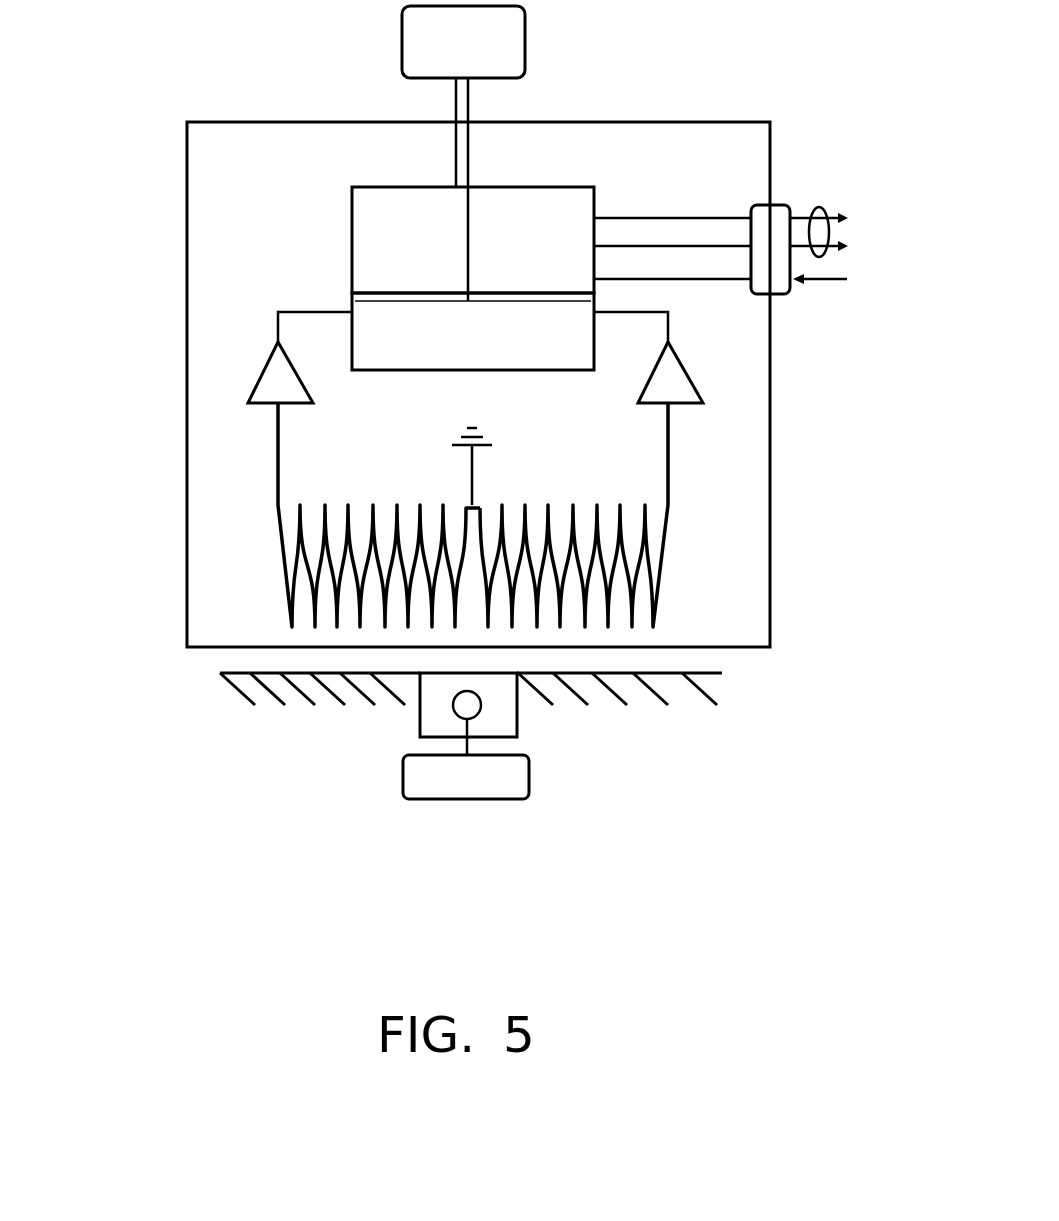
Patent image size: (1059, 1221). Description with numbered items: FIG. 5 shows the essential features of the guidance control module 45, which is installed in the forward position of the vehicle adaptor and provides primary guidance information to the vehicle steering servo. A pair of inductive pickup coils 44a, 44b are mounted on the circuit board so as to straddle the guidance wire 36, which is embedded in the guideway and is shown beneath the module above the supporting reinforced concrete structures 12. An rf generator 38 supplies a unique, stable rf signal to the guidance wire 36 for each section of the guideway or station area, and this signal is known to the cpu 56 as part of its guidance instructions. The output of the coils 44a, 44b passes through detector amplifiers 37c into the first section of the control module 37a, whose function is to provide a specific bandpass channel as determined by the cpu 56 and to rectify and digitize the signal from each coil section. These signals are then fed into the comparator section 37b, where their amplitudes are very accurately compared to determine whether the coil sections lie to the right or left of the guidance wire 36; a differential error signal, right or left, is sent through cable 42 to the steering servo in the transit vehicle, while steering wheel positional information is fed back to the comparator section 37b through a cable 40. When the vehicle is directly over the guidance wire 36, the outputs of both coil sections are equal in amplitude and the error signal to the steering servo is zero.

The cpu 56 is at (514, 46).
The guidance control module 45 is at (771, 497).
The comparator section 37b is at (385, 220).
The first section of the control module 37a is at (428, 315).
The detector amplifiers 37c is at (263, 383).
The inductive pickup coil 44a is at (642, 540).
The inductive pickup coil 44b is at (305, 540).
The cable 42 is at (820, 207).
The cable 40 is at (817, 285).
The reinforced concrete structures 12 is at (705, 689).
The guidance wire 36 is at (477, 712).
The rf generator 38 is at (529, 775).